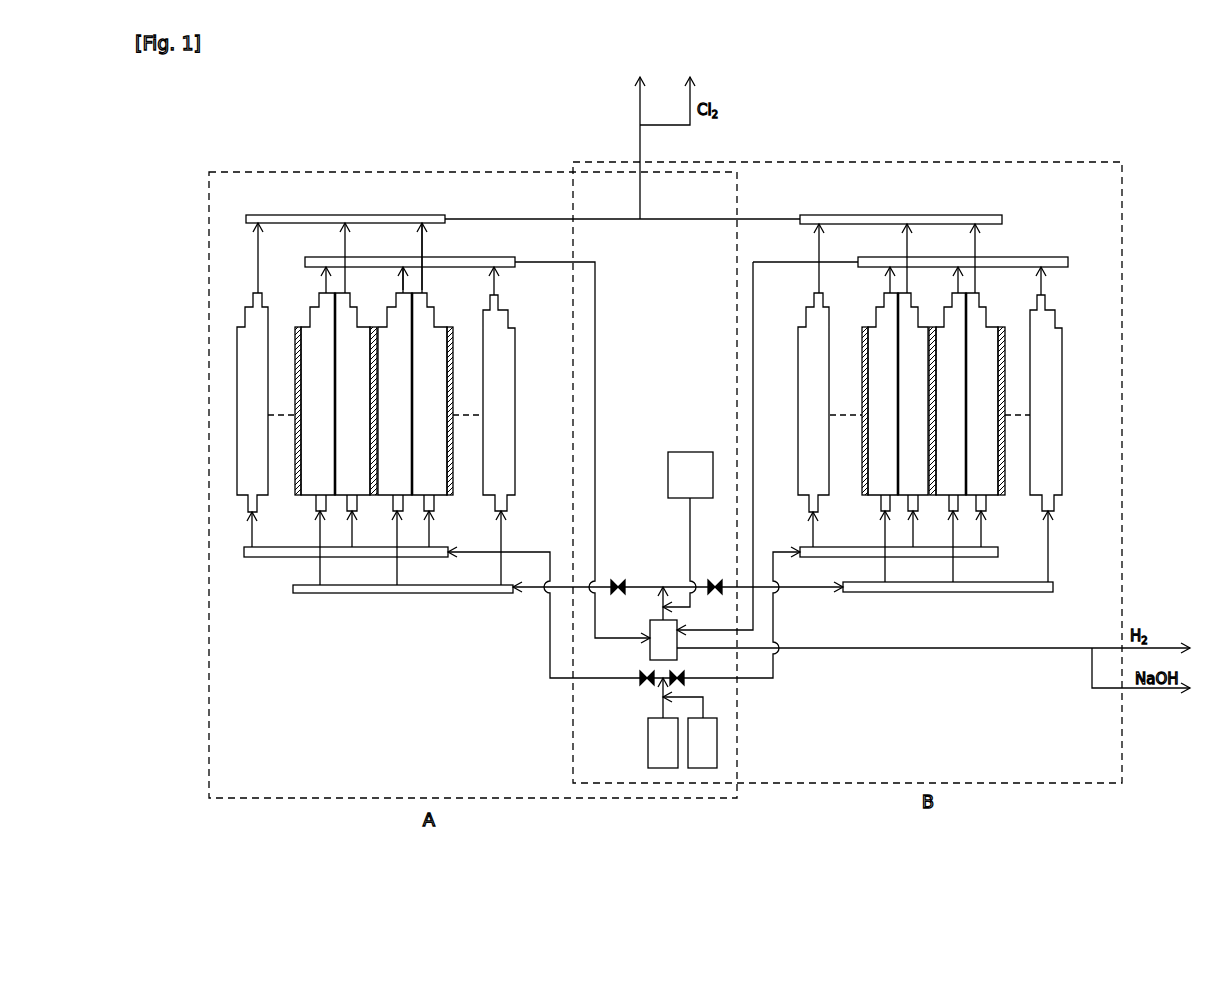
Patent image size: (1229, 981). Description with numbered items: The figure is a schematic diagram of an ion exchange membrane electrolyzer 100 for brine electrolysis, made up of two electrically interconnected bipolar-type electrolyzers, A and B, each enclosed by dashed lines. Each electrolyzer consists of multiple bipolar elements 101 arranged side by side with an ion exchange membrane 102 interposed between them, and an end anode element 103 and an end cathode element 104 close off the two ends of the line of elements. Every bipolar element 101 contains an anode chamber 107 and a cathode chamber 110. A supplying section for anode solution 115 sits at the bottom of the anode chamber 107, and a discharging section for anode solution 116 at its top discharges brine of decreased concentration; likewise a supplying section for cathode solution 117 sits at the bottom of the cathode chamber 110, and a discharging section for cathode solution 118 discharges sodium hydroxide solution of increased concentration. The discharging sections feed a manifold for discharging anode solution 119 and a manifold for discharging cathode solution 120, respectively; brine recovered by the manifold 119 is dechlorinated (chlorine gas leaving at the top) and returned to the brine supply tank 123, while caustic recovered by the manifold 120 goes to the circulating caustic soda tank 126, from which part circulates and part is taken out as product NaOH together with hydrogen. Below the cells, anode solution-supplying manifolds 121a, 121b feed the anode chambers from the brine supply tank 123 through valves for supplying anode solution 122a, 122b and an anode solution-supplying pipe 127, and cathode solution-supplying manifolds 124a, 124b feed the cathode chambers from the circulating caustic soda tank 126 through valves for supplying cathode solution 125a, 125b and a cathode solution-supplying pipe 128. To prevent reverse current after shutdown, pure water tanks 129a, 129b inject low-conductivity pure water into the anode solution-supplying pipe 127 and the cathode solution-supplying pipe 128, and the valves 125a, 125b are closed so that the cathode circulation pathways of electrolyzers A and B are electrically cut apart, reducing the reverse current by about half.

The ion exchange membrane electrolyzer 100 is at (890, 137).
The bipolar element 101 is at (449, 292).
The ion exchange membrane 102 is at (457, 342).
The end anode element 103 is at (237, 403).
The end cathode element 104 is at (515, 393).
The anode chamber 107 is at (367, 399).
The cathode chamber 110 is at (332, 399).
The supplying section for anode solution 115 is at (437, 500).
The discharging section for anode solution 116 is at (436, 305).
The supplying section for cathode solution 117 is at (407, 500).
The discharging section for cathode solution 118 is at (390, 298).
The manifold for discharging anode solution 119 is at (334, 215).
The manifold for discharging cathode solution 120 is at (306, 257).
The anode solution-supplying manifold 121a is at (303, 557).
The anode solution-supplying manifold 121b is at (985, 557).
The valve for supplying anode solution 122a is at (641, 677).
The valve for supplying anode solution 122b is at (683, 683).
The brine supply tank 123 is at (648, 733).
The cathode solution-supplying manifold 124a is at (367, 593).
The cathode solution-supplying manifold 124b is at (935, 592).
The valve for supplying cathode solution 125a is at (618, 580).
The valve for supplying cathode solution 125b is at (713, 580).
The circulating caustic soda tank 126 is at (680, 640).
The anode solution-supplying pipe 127 is at (660, 694).
The cathode solution-supplying pipe 128 is at (660, 612).
The pure water tank 129a is at (717, 740).
The pure water tank 129b is at (688, 452).